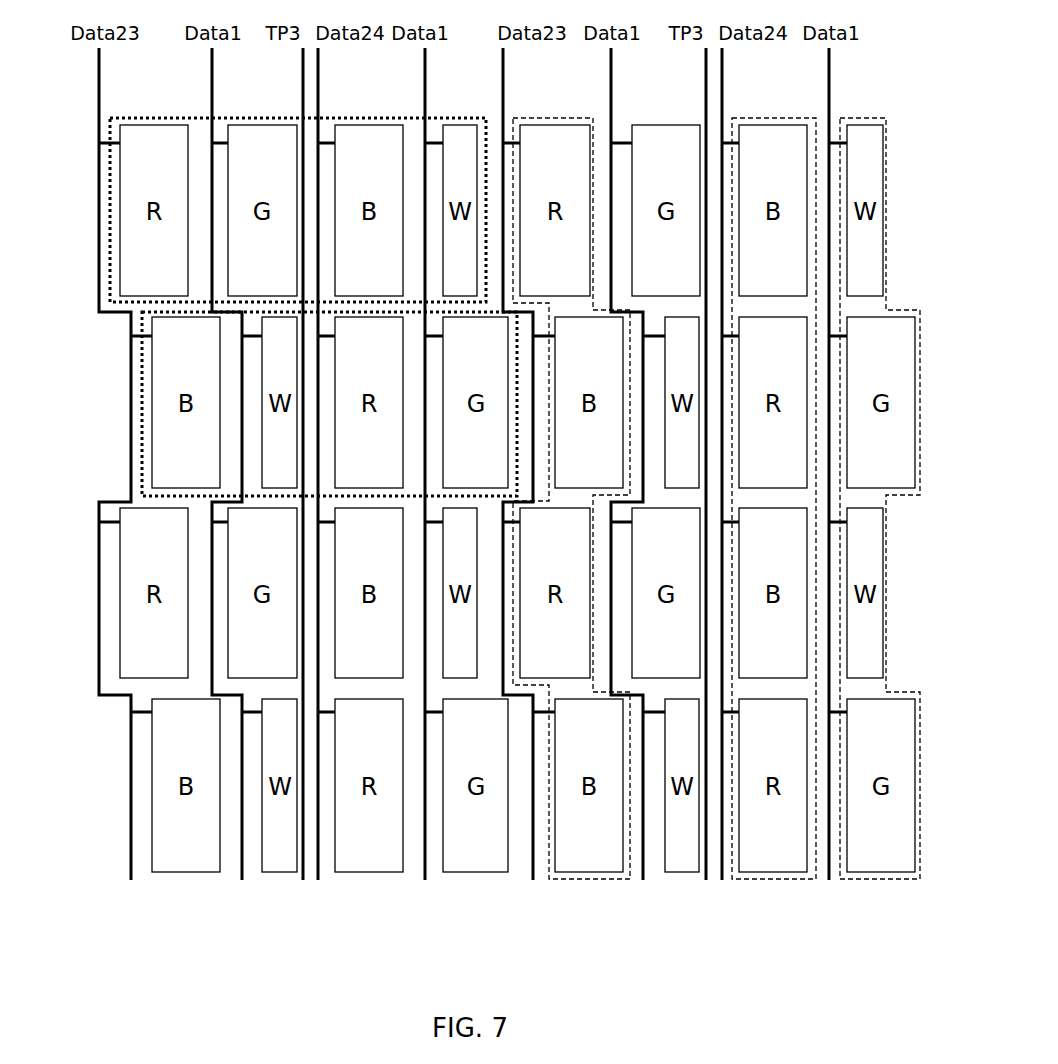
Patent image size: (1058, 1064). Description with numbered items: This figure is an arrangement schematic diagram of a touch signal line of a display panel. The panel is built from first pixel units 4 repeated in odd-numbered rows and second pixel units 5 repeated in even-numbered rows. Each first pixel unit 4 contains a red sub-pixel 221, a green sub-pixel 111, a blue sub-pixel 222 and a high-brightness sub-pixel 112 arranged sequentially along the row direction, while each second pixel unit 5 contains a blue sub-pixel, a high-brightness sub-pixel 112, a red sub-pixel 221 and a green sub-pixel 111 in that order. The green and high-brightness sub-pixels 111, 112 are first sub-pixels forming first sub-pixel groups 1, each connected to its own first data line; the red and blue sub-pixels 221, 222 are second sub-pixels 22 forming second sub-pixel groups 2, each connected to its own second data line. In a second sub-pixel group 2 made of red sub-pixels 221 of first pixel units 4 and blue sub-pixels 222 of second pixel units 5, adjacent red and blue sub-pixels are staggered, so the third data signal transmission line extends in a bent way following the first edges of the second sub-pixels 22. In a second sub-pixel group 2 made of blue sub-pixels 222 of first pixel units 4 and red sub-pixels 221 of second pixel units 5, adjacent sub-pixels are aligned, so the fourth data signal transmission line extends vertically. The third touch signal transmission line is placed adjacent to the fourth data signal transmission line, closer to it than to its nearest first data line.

The first sub-pixel group 1 is at (860, 118).
The second sub-pixel group 2 is at (560, 118).
The first pixel unit 4 is at (112, 228).
The second pixel unit 5 is at (142, 388).
The second sub-pixel 22 is at (785, 850).
The green sub-pixel 111 is at (291, 125).
The high-brightness sub-pixel 112 is at (465, 125).
The red sub-pixel 221 is at (176, 125).
The blue sub-pixel 222 is at (394, 125).